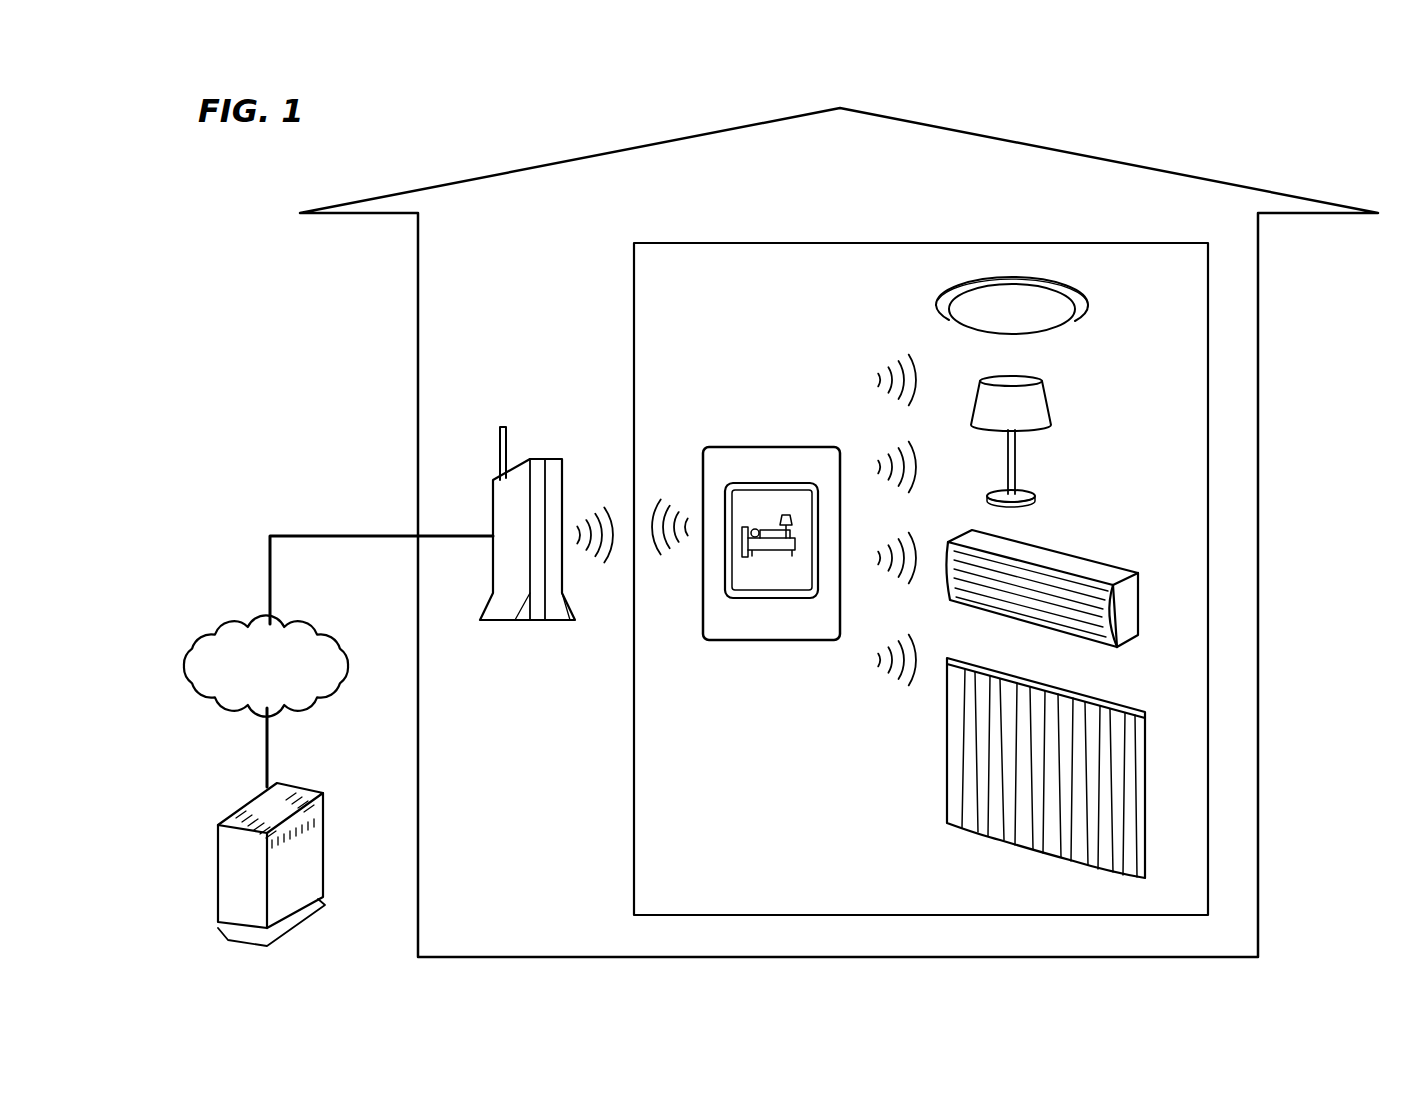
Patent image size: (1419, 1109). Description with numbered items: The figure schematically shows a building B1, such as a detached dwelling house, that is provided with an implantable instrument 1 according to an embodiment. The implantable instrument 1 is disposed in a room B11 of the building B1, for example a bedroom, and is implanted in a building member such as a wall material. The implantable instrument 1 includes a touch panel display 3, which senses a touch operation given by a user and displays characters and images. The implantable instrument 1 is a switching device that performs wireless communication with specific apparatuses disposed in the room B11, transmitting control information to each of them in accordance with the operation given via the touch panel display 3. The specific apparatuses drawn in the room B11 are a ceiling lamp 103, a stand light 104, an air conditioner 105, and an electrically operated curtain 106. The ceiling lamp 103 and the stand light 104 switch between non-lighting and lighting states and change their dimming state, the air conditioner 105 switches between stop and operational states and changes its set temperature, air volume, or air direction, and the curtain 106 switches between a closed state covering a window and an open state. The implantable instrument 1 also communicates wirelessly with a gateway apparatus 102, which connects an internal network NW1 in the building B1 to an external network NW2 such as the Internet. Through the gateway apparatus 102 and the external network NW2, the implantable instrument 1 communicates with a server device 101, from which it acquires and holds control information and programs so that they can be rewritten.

The implantable instrument 1 is at (766, 498).
The touch panel display 3 is at (770, 505).
The server device 101 is at (218, 875).
The gateway apparatus 102 is at (493, 497).
The ceiling lamp 103 is at (1077, 318).
The stand light 104 is at (1047, 404).
The air conditioner 105 is at (1071, 553).
The curtain 106 is at (1120, 706).
The building B1 is at (1078, 155).
The room B11 is at (888, 240).
The internal network NW1 is at (617, 487).
The external network NW2 is at (214, 603).